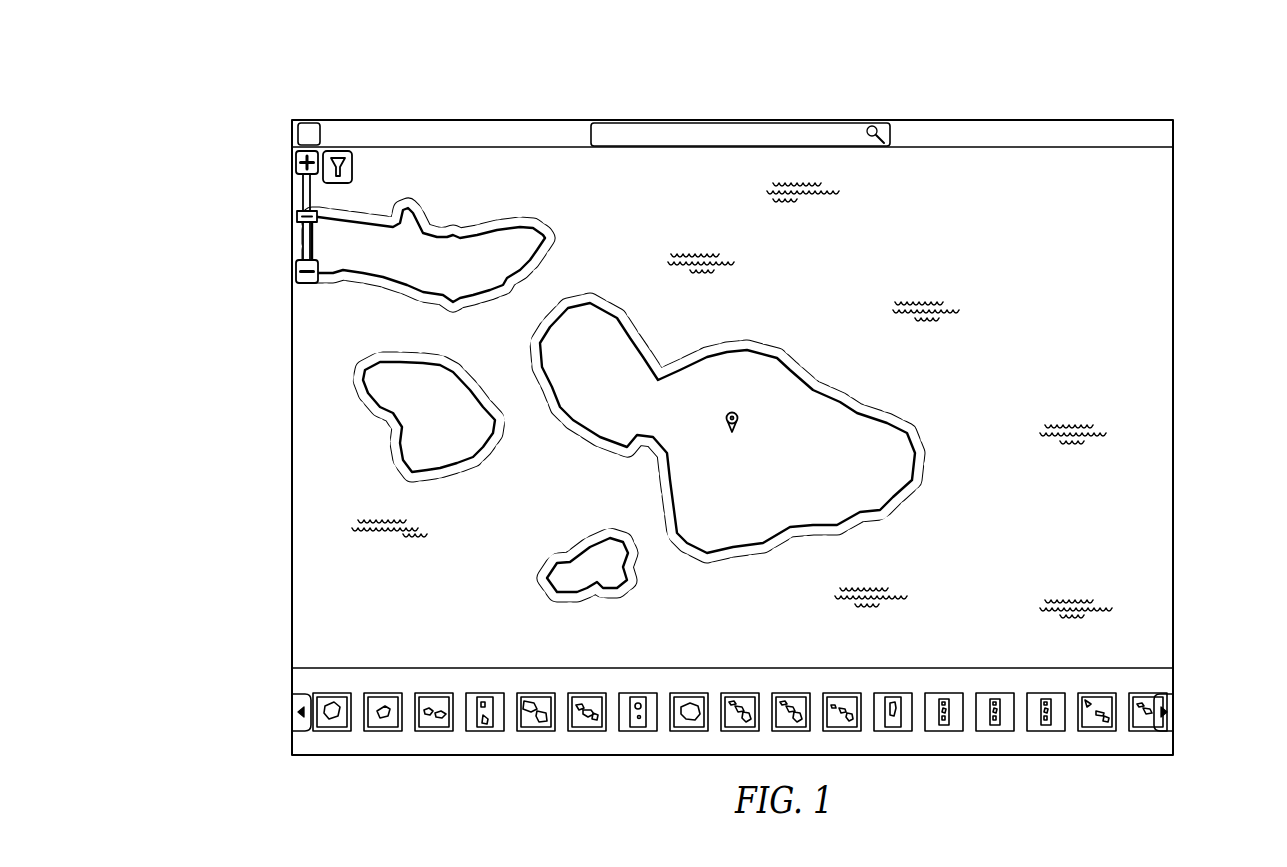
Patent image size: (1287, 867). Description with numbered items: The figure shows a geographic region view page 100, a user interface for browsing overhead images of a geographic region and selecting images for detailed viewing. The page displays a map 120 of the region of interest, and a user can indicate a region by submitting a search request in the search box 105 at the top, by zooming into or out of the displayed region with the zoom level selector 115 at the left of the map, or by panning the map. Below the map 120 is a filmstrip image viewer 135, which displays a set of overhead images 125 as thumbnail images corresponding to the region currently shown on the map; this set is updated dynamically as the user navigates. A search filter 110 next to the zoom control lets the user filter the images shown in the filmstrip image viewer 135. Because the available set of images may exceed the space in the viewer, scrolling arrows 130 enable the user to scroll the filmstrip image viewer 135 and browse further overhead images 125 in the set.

The geographic region view page 100 is at (1197, 108).
The search box 105 is at (740, 130).
The search filter 110 is at (338, 150).
The zoom level selector 115 is at (292, 216).
The map 120 is at (284, 450).
The overhead images 125 is at (487, 693).
The scrolling arrows 130 is at (297, 710).
The filmstrip image viewer 135 is at (245, 711).